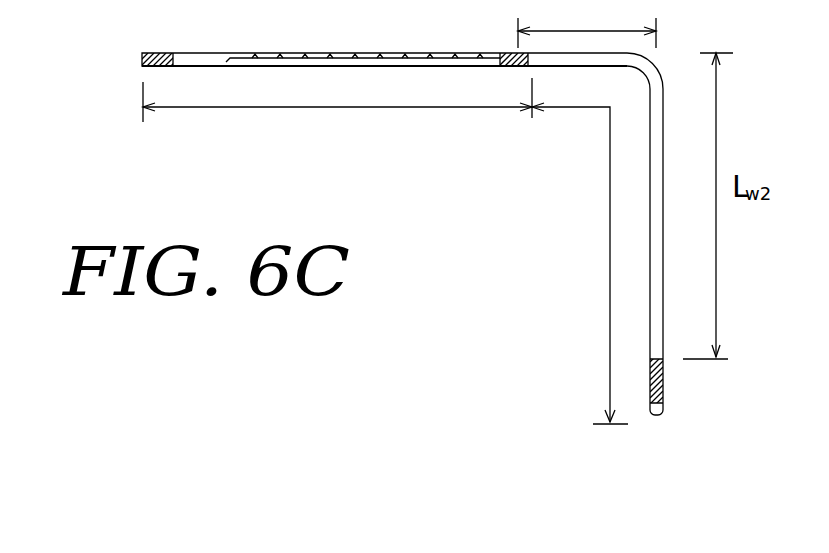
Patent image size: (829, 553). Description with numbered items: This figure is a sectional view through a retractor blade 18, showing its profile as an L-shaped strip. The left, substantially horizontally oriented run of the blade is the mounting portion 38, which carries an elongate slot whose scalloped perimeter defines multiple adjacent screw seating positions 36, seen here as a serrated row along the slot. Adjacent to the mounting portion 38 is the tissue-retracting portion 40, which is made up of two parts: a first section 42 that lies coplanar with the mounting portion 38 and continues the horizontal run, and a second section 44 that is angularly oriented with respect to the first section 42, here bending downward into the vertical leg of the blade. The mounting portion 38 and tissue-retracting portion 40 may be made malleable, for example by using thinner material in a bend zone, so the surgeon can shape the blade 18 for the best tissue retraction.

The retractor blade 18 is at (124, 59).
The screw seating positions 36 is at (396, 53).
The mounting portion 38 is at (270, 107).
The tissue-retracting portion 40 is at (610, 232).
The first section 42 is at (585, 31).
The second section 44 is at (657, 356).